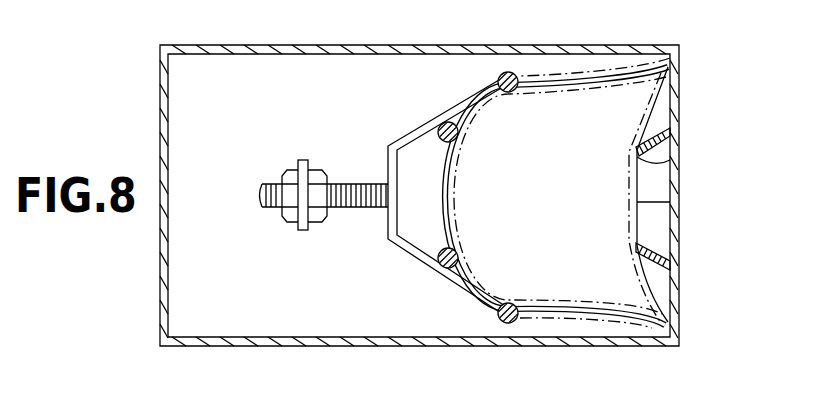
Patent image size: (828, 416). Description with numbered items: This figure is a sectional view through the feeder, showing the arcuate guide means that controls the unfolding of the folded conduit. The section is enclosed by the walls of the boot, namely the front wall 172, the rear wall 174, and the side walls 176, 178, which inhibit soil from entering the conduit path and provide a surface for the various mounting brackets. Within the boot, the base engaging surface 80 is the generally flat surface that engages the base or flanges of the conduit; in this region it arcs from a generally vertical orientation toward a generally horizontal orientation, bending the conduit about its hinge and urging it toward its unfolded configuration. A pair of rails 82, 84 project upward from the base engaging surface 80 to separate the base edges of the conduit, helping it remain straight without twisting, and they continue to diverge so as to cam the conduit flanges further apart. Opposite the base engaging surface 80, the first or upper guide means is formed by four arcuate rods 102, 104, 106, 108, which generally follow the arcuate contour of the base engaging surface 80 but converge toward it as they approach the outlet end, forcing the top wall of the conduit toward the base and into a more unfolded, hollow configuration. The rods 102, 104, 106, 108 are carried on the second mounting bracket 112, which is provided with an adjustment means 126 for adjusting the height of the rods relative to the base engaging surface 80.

The base engaging surface 80 is at (672, 104).
The rail 82 is at (672, 264).
The rail 84 is at (670, 160).
The arcuate rod 102 is at (516, 89).
The arcuate rod 104 is at (458, 135).
The arcuate rod 106 is at (455, 253).
The arcuate rod 108 is at (512, 303).
The second mounting bracket 112 is at (414, 114).
The adjustment means 126 is at (320, 155).
The front wall 172 is at (678, 317).
The rear wall 174 is at (160, 91).
The side wall 176 is at (470, 45).
The side wall 178 is at (460, 347).